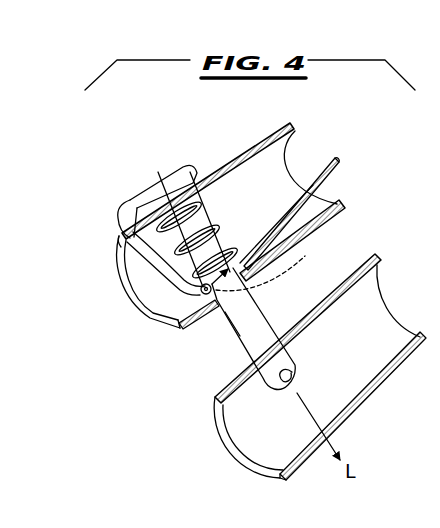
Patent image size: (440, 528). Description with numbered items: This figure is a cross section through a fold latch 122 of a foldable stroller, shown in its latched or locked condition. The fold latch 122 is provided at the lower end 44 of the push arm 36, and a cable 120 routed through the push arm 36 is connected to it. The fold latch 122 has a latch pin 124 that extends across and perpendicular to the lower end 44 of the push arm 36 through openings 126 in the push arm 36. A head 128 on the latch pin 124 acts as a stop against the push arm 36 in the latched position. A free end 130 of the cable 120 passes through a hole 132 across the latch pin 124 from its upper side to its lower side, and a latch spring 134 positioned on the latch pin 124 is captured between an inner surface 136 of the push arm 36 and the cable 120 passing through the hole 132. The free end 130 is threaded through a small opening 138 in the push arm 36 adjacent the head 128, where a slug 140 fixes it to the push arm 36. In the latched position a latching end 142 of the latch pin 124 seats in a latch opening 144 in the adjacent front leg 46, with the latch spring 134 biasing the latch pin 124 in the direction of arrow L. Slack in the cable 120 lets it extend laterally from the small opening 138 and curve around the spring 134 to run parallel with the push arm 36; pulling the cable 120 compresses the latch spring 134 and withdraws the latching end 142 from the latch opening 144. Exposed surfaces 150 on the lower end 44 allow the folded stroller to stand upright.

The push arm 36 is at (286, 162).
The lower end 44 is at (203, 325).
The front leg 46 is at (386, 309).
The cable 120 is at (341, 168).
The fold latch 122 is at (165, 355).
The latch pin 124 is at (236, 330).
The openings 126 is at (158, 208).
The head 128 is at (186, 168).
The free end 130 is at (125, 243).
The hole 132 is at (248, 231).
The latch spring 134 is at (212, 238).
The inner surface 136 is at (253, 197).
The small opening 138 is at (122, 238).
The slug 140 is at (122, 210).
The latching end 142 is at (292, 372).
The latch opening 144 is at (288, 352).
The exposed surfaces 150 is at (120, 290).